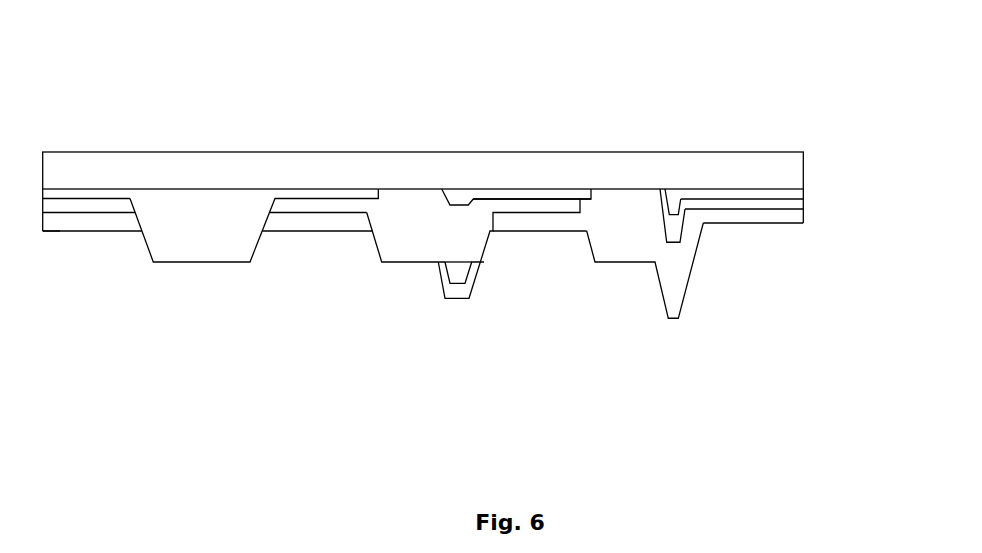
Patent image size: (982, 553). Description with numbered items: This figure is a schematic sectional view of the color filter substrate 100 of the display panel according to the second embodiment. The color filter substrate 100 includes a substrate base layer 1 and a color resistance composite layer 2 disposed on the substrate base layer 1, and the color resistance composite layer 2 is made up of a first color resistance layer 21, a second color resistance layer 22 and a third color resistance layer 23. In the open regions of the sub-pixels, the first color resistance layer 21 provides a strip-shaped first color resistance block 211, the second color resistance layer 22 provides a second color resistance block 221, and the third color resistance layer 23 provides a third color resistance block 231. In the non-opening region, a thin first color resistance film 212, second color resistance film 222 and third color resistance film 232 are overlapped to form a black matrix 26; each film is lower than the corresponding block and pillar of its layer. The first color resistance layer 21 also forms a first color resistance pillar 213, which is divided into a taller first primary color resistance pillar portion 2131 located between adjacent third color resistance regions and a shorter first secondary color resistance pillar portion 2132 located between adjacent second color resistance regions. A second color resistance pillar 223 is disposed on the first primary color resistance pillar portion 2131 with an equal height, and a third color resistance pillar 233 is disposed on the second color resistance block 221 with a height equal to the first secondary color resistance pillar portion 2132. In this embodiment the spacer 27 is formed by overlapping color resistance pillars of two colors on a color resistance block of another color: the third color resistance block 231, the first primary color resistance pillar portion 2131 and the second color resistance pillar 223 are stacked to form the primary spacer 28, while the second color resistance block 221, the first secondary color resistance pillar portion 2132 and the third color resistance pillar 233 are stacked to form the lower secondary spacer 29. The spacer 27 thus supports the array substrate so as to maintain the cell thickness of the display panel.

The color filter substrate 100 is at (456, 74).
The substrate base layer 1 is at (773, 177).
The color resistance composite layer 2 is at (902, 180).
The first color resistance layer 21 is at (791, 170).
The second color resistance layer 22 is at (793, 189).
The third color resistance layer 23 is at (802, 218).
The first color resistance block 211 is at (175, 220).
The second color resistance block 221 is at (387, 212).
The third color resistance block 231 is at (603, 218).
The first color resistance film 212 is at (55, 190).
The second color resistance film 222 is at (73, 208).
The third color resistance film 232 is at (115, 220).
The black matrix 26 is at (92, 313).
The third color resistance pillar 233 is at (458, 290).
The first color resistance pillar 213 is at (534, 269).
The first primary color resistance pillar portion 2131 is at (673, 196).
The first secondary color resistance pillar portion 2132 is at (460, 198).
The second color resistance pillar 223 is at (670, 232).
The secondary spacer 29 is at (480, 367).
The primary spacer 28 is at (725, 375).
The spacer 27 is at (580, 392).